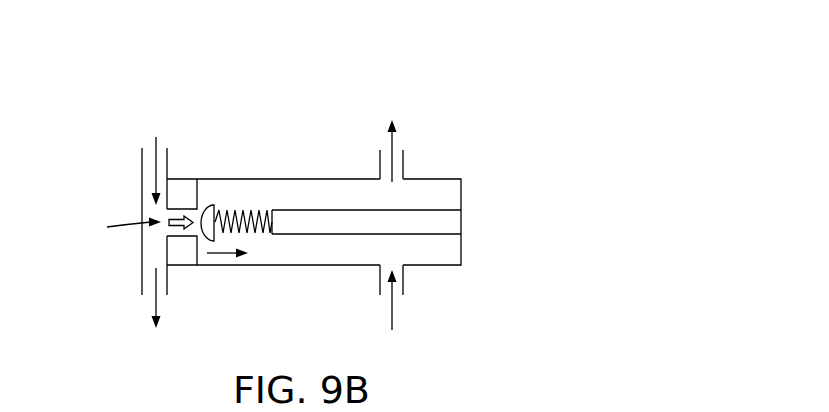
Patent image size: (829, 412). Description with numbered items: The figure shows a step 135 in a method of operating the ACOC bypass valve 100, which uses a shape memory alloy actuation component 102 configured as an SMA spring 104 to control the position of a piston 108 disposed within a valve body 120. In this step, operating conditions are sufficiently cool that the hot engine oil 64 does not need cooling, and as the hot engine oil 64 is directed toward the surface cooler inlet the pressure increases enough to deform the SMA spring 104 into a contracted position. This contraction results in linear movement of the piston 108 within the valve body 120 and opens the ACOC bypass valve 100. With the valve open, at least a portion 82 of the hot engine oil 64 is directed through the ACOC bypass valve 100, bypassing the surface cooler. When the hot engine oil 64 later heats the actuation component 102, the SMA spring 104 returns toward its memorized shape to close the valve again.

The hot engine oil 64 is at (157, 144).
The portion of the hot engine oil 82 is at (218, 256).
The ACOC bypass valve 100 is at (259, 189).
The actuation component 102 is at (278, 162).
The SMA spring 104 is at (250, 210).
The piston 108 is at (211, 242).
The valve body 120 is at (447, 177).
The step 135 is at (318, 172).